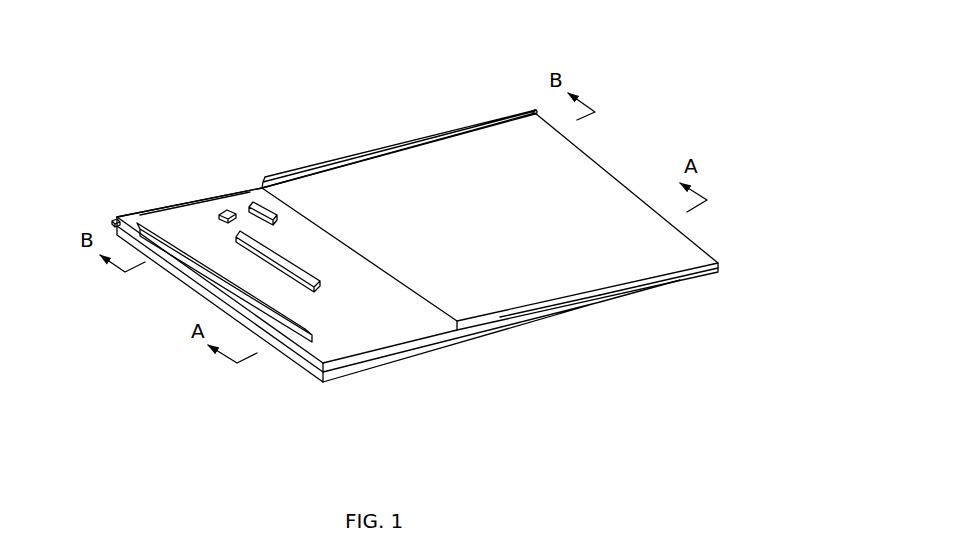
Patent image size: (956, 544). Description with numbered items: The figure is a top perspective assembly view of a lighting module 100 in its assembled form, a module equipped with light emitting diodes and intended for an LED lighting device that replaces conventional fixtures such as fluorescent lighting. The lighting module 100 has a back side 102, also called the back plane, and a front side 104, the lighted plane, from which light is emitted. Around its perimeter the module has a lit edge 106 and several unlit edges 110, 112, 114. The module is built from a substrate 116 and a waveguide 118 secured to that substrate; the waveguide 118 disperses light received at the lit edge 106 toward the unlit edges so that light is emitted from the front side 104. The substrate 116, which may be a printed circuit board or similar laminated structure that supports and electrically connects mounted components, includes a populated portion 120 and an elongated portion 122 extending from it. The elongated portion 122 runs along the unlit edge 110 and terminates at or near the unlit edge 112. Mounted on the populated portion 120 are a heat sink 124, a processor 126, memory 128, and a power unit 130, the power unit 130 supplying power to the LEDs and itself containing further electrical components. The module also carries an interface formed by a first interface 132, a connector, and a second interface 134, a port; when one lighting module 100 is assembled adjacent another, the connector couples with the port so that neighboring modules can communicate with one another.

The lighting module 100 is at (465, 50).
The back side 102 is at (200, 123).
The front side 104 is at (272, 404).
The lit edge 106 is at (108, 207).
The unlit edge 110 is at (348, 146).
The unlit edge 112 is at (634, 153).
The unlit edge 114 is at (698, 291).
The substrate 116 is at (230, 181).
The waveguide 118 is at (598, 308).
The populated portion 120 is at (177, 213).
The elongated portion 122 is at (428, 138).
The heat sink 124 is at (147, 224).
The processor 126 is at (222, 212).
The memory 128 is at (250, 205).
The power unit 130 is at (317, 286).
The first interface 132 is at (538, 101).
The second interface 134 is at (110, 223).